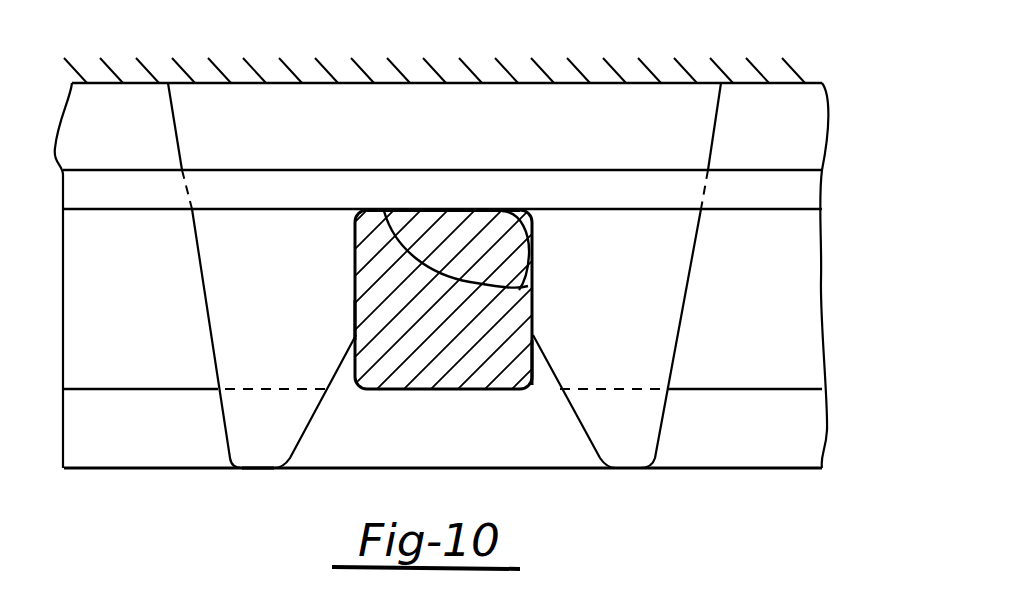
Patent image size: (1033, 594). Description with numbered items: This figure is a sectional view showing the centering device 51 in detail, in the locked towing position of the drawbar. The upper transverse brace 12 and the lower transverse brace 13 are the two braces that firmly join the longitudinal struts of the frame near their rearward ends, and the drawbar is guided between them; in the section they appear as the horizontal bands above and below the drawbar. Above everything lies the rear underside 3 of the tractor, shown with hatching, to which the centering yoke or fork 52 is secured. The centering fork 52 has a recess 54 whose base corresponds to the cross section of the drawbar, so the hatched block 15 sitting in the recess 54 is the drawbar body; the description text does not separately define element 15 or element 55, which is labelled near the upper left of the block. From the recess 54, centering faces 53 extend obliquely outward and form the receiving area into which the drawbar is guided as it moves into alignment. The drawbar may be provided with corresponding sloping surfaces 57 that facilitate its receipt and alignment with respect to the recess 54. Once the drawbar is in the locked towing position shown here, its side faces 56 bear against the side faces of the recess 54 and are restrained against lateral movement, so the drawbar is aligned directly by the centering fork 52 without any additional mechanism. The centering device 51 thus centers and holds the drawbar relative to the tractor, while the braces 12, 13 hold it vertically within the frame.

The rear underside of the tractor 3 is at (746, 84).
The upper transverse brace 12 is at (799, 190).
The lower transverse brace 13 is at (790, 435).
The seal ring 15 is at (468, 327).
The centering device 51 is at (288, 485).
The centering yoke or fork 52 is at (633, 420).
The centering faces 53 is at (319, 423).
The recess 54 is at (518, 212).
The sealing lip 55 is at (384, 211).
The side faces of the drawbar 56 is at (357, 320).
The sloping surfaces 57 is at (530, 231).